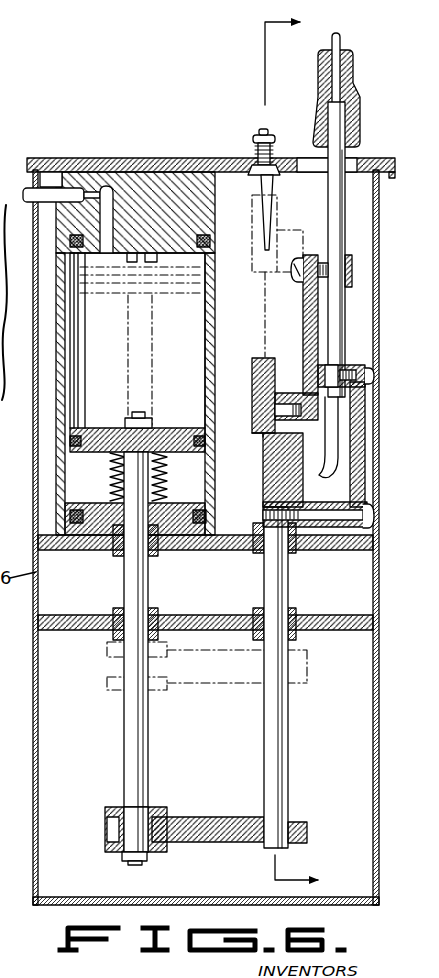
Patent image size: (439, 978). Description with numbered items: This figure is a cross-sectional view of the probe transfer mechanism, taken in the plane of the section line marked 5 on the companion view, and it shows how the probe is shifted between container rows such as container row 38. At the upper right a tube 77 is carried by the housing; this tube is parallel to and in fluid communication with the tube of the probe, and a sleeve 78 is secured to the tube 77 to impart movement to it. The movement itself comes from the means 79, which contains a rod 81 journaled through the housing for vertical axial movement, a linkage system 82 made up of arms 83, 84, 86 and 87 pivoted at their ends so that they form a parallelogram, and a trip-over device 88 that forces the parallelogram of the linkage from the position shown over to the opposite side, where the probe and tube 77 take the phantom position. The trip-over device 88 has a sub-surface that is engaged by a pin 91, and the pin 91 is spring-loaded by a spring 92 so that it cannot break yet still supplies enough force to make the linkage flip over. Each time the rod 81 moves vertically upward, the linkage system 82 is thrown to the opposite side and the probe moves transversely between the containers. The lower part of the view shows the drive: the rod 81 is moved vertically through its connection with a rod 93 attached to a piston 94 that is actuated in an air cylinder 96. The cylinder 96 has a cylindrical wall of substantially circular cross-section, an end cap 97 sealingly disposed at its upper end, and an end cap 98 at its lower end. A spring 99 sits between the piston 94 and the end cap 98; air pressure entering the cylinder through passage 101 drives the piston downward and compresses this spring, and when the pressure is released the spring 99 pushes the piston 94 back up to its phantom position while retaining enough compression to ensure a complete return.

The container row 38 is at (50, 285).
The passage 101 is at (112, 196).
The end cap 97 is at (166, 178).
The spring 92 is at (254, 148).
The pin 91 is at (270, 215).
The tube 77 is at (343, 206).
The sleeve 78 is at (350, 256).
The means for moving 79 is at (252, 284).
The arm 84 is at (304, 312).
The arm 86 is at (337, 328).
The trip-over device 88 is at (257, 358).
The linkage system 82 is at (254, 437).
The spring 99 is at (170, 492).
The arm 83 is at (268, 492).
The arm 87 is at (356, 508).
The end cap 98 is at (180, 546).
The piston 94 is at (163, 428).
The air cylinder 96 is at (60, 418).
The rod 93 is at (140, 752).
The rod 81 is at (282, 752).
The section line 5- 5 is at (303, 456).